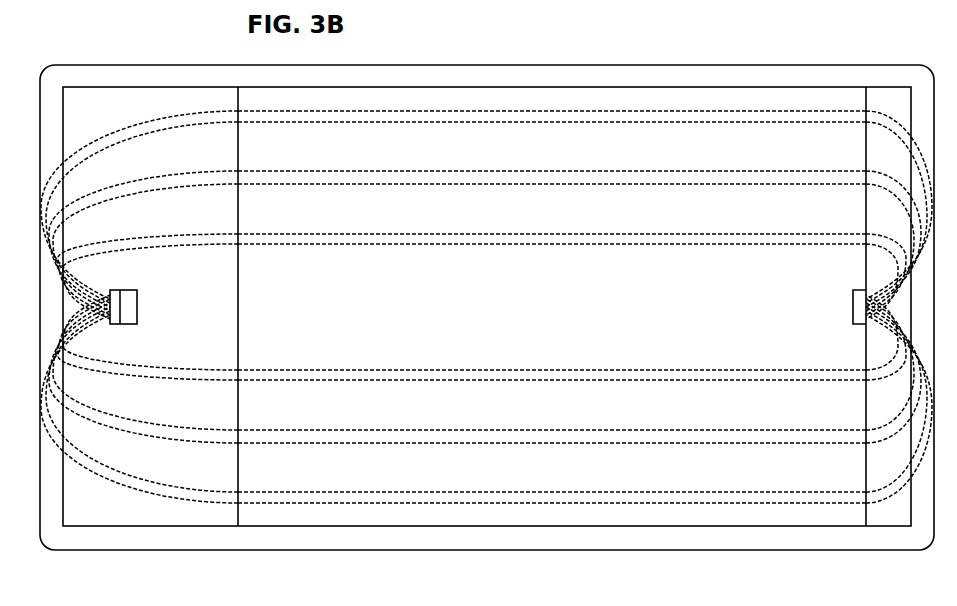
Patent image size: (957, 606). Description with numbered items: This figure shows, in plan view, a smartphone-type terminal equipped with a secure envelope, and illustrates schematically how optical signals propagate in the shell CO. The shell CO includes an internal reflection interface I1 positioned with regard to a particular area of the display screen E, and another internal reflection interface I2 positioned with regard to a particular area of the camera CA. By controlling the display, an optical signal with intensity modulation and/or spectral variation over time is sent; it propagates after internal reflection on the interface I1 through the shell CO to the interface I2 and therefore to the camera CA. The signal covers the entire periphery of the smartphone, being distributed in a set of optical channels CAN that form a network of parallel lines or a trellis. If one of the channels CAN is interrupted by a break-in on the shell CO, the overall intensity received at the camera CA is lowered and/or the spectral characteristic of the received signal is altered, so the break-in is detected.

The shell CO is at (786, 77).
The display screen E is at (478, 517).
The optical channels CAN is at (376, 116).
The internal reflection interface I2 is at (115, 305).
The internal reflection interface I1 is at (855, 302).
The camera CA is at (129, 327).